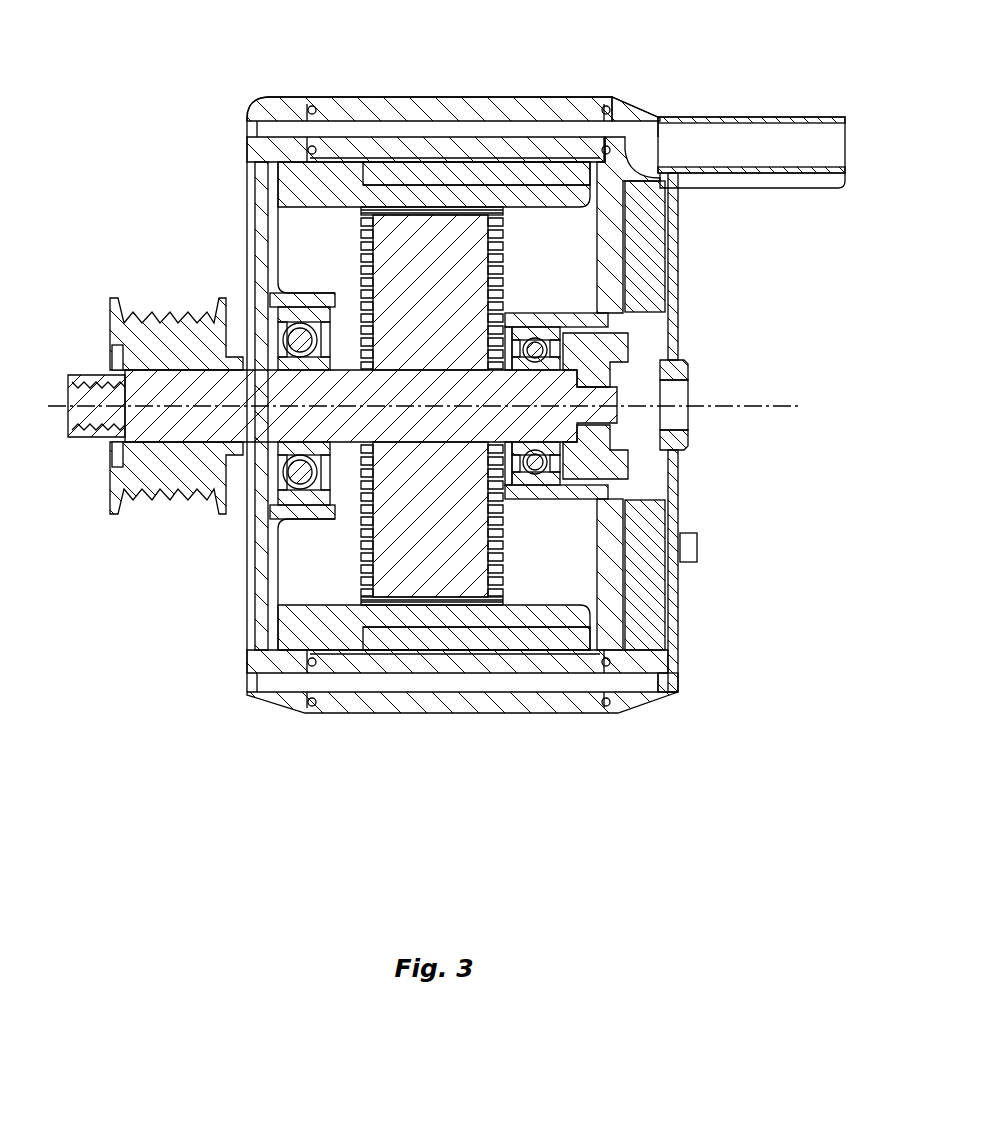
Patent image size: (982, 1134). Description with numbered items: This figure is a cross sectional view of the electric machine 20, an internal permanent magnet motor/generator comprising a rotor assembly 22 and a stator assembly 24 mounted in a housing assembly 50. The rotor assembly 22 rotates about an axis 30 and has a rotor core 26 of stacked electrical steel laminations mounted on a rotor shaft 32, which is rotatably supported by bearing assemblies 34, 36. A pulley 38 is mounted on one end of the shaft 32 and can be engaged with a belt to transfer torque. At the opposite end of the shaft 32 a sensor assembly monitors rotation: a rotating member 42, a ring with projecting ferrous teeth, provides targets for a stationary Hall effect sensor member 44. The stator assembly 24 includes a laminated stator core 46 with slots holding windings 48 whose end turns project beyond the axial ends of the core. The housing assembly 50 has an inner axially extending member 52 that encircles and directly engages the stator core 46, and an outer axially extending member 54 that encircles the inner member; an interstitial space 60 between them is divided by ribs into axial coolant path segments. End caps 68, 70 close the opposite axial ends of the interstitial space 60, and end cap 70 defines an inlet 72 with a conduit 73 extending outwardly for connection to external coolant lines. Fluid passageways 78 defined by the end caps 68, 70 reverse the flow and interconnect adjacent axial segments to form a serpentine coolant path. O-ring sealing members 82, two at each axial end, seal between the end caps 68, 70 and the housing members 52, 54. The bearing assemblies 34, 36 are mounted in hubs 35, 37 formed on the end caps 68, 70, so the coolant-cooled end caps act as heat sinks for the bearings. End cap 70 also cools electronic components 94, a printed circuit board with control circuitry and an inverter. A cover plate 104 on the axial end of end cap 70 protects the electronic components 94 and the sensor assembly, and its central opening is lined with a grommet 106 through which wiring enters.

The electric machine 20 is at (133, 94).
The rotor assembly 22 is at (385, 572).
The stator assembly 24 is at (290, 190).
The rotor core 26 is at (385, 232).
The axis 30 is at (769, 398).
The rotor shaft 32 is at (175, 432).
The bearing assembly 34 is at (290, 312).
The hub 35 is at (295, 512).
The bearing assembly 36 is at (545, 330).
The hub 37 is at (540, 490).
The pulley 38 is at (150, 336).
The rotating member 42 is at (604, 447).
The stationary member 44 is at (620, 350).
The stator core 46 is at (415, 176).
The windings 48 is at (345, 148).
The housing assembly 50 is at (250, 103).
The inner axially extending member 52 is at (470, 150).
The outer axially extending member 54 is at (582, 100).
The interstitial space 60 is at (440, 684).
The end cap 68 is at (258, 129).
The end cap 70 is at (648, 120).
The inlet 72 is at (626, 135).
The conduit 73 is at (735, 117).
The fluid passageway 78 is at (278, 690).
The sealing member 82 is at (315, 146).
The electronic components 94 is at (660, 215).
The cover plate 104 is at (680, 478).
The grommet 106 is at (690, 390).